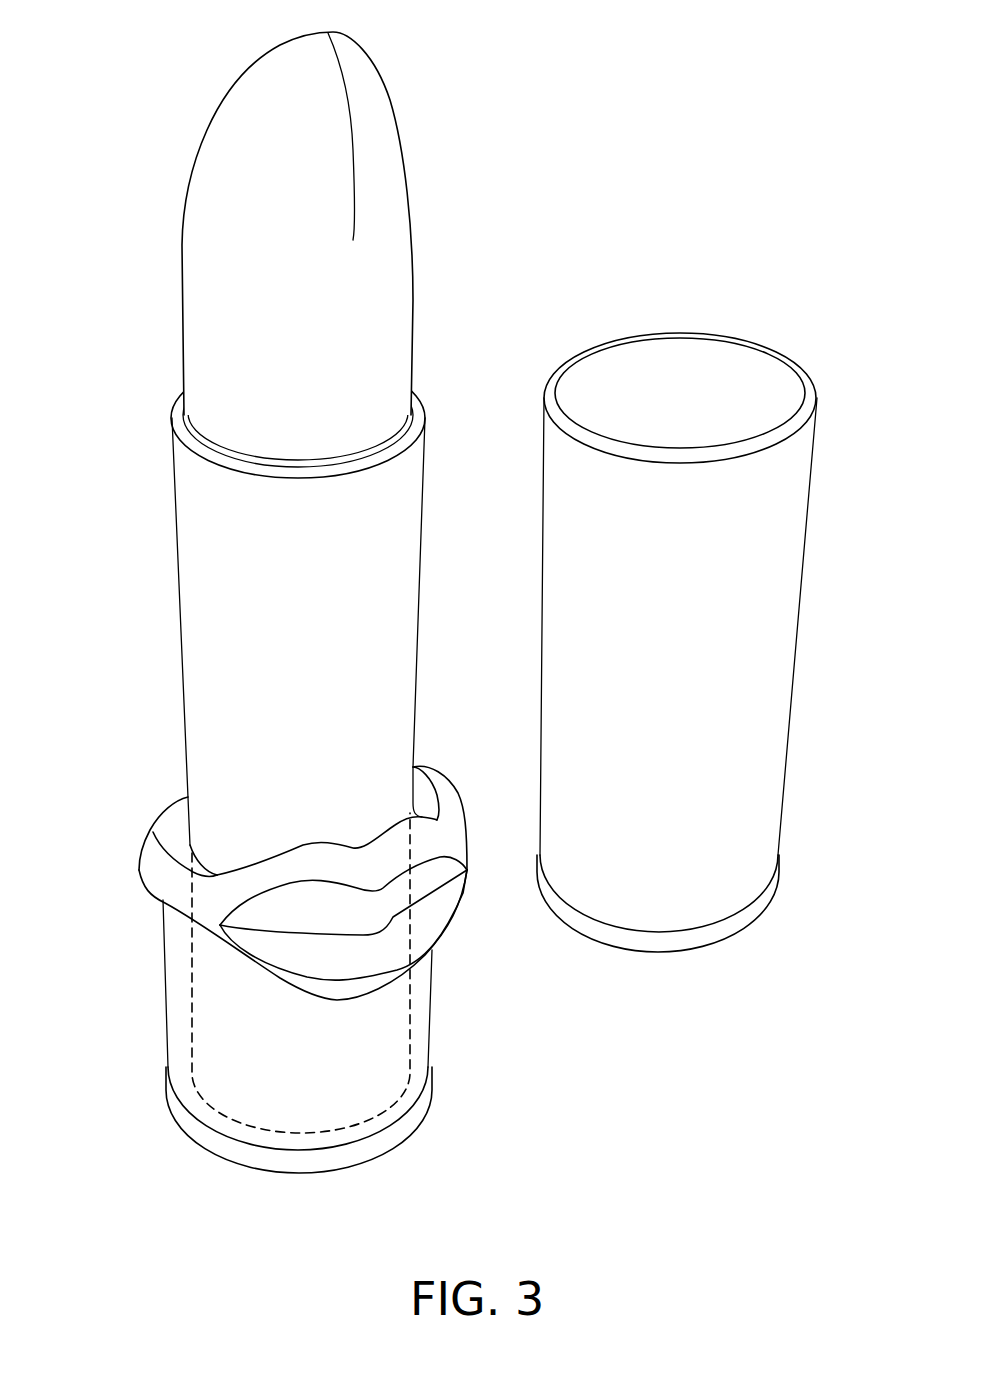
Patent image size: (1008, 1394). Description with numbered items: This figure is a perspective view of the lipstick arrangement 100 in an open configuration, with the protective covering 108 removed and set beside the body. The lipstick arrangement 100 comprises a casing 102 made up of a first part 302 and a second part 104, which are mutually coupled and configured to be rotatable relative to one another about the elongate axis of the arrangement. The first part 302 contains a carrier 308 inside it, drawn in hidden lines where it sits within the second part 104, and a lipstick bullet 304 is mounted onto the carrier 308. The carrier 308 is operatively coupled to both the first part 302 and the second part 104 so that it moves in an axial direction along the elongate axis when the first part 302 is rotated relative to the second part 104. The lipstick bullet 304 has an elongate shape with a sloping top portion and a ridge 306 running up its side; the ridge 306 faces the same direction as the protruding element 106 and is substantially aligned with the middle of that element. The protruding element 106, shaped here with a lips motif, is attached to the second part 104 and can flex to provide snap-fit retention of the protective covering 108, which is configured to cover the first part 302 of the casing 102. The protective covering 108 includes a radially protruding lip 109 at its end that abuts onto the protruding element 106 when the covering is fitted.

The lipstick arrangement 100 is at (574, 46).
The casing 102 is at (166, 1050).
The second part 104 is at (430, 1003).
The protruding element 106 is at (143, 880).
The protective covering 108 is at (808, 508).
The radially protruding lip 109 is at (765, 897).
The first part 302 is at (175, 532).
The lipstick bullet 304 is at (250, 258).
The ridge 306 is at (353, 143).
The carrier 308 is at (413, 1043).